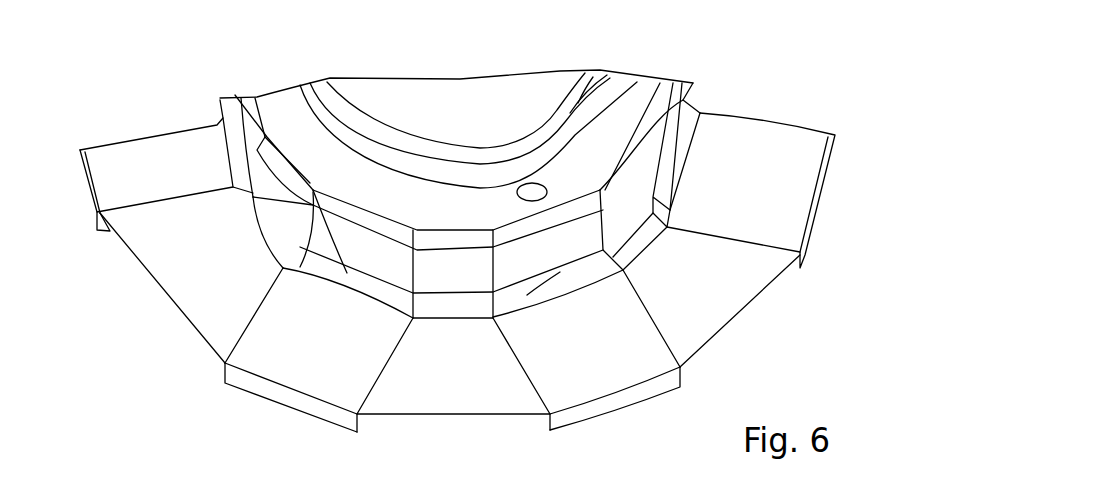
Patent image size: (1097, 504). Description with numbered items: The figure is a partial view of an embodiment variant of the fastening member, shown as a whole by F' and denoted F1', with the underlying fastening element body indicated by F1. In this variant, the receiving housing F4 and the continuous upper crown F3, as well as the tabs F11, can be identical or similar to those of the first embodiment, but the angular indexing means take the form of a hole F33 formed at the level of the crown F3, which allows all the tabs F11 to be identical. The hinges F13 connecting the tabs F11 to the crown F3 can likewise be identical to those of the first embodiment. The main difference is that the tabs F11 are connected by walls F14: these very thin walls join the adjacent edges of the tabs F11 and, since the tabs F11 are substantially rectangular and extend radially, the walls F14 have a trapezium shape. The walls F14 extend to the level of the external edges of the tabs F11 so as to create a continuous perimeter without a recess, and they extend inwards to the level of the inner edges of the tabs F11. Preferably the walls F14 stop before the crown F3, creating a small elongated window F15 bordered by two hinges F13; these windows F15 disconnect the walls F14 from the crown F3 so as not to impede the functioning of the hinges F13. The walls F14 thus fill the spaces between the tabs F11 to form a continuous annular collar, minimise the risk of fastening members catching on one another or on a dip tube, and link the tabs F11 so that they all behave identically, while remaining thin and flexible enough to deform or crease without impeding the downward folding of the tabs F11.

The fastening element F' is at (489, 246).
The fastening member F1' is at (164, 141).
The fastening element body F1 is at (489, 246).
The tabs F11 is at (300, 353).
The hinges F13 is at (233, 157).
The walls F14 is at (197, 278).
The elongated window F15 is at (450, 310).
The continuous upper crown F3 is at (683, 100).
The hole F33 is at (530, 190).
The receiving housing F4 is at (607, 77).